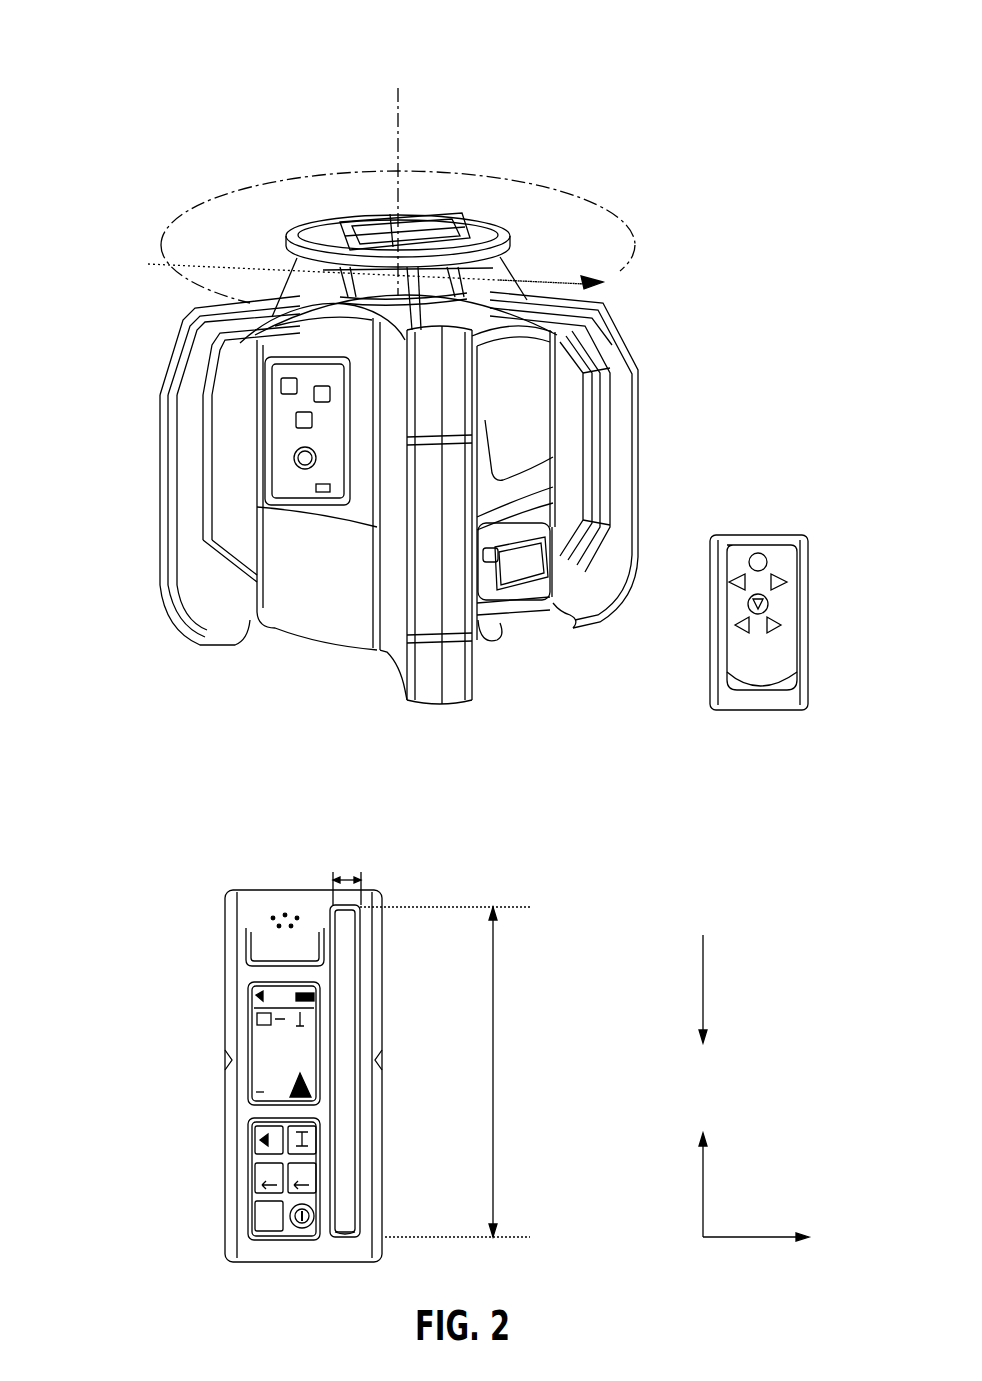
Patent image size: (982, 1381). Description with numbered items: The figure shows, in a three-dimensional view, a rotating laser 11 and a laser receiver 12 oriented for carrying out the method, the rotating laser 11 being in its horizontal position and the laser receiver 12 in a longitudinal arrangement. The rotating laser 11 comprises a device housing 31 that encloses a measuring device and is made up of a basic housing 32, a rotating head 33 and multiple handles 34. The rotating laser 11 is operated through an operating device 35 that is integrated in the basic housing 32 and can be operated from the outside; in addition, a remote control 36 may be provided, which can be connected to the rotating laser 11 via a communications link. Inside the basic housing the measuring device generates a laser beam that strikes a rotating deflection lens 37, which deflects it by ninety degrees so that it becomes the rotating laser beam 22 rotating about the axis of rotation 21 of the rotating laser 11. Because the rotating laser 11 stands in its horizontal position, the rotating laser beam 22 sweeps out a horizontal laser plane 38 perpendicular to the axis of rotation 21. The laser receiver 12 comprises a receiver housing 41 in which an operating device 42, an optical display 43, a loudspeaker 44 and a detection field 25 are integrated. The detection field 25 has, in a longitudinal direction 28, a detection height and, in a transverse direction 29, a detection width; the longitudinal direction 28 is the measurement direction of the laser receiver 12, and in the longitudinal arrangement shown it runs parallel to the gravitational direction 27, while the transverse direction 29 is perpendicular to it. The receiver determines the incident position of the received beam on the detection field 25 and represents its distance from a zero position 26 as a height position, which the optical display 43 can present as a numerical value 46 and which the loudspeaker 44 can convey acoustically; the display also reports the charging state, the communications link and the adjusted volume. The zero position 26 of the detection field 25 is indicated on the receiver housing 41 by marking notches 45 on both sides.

The rotating laser 11 is at (602, 84).
The laser receiver 12 is at (160, 877).
The axis of rotation 21 is at (400, 128).
The rotating laser beam 22 is at (553, 283).
The detection field 25 is at (378, 940).
The zero position 26 is at (290, 1064).
The gravitational direction 27 is at (703, 987).
The longitudinal direction 28 is at (704, 1166).
The transverse direction 29 is at (775, 1240).
The device housing 31 is at (654, 348).
The basic housing 32 is at (337, 627).
The rotating head 33 is at (322, 206).
The handles 34 is at (190, 488).
The operating device 35 is at (300, 505).
The remote control 36 is at (762, 705).
The deflection lens 37 is at (350, 265).
The horizontal laser plane 38 is at (548, 204).
The receiver housing 41 is at (372, 1214).
The operating device 42 is at (252, 1160).
The optical display 43 is at (250, 1000).
The loudspeaker 44 is at (282, 914).
The marking notches 45 is at (240, 1060).
The displayed value 46 is at (269, 1070).